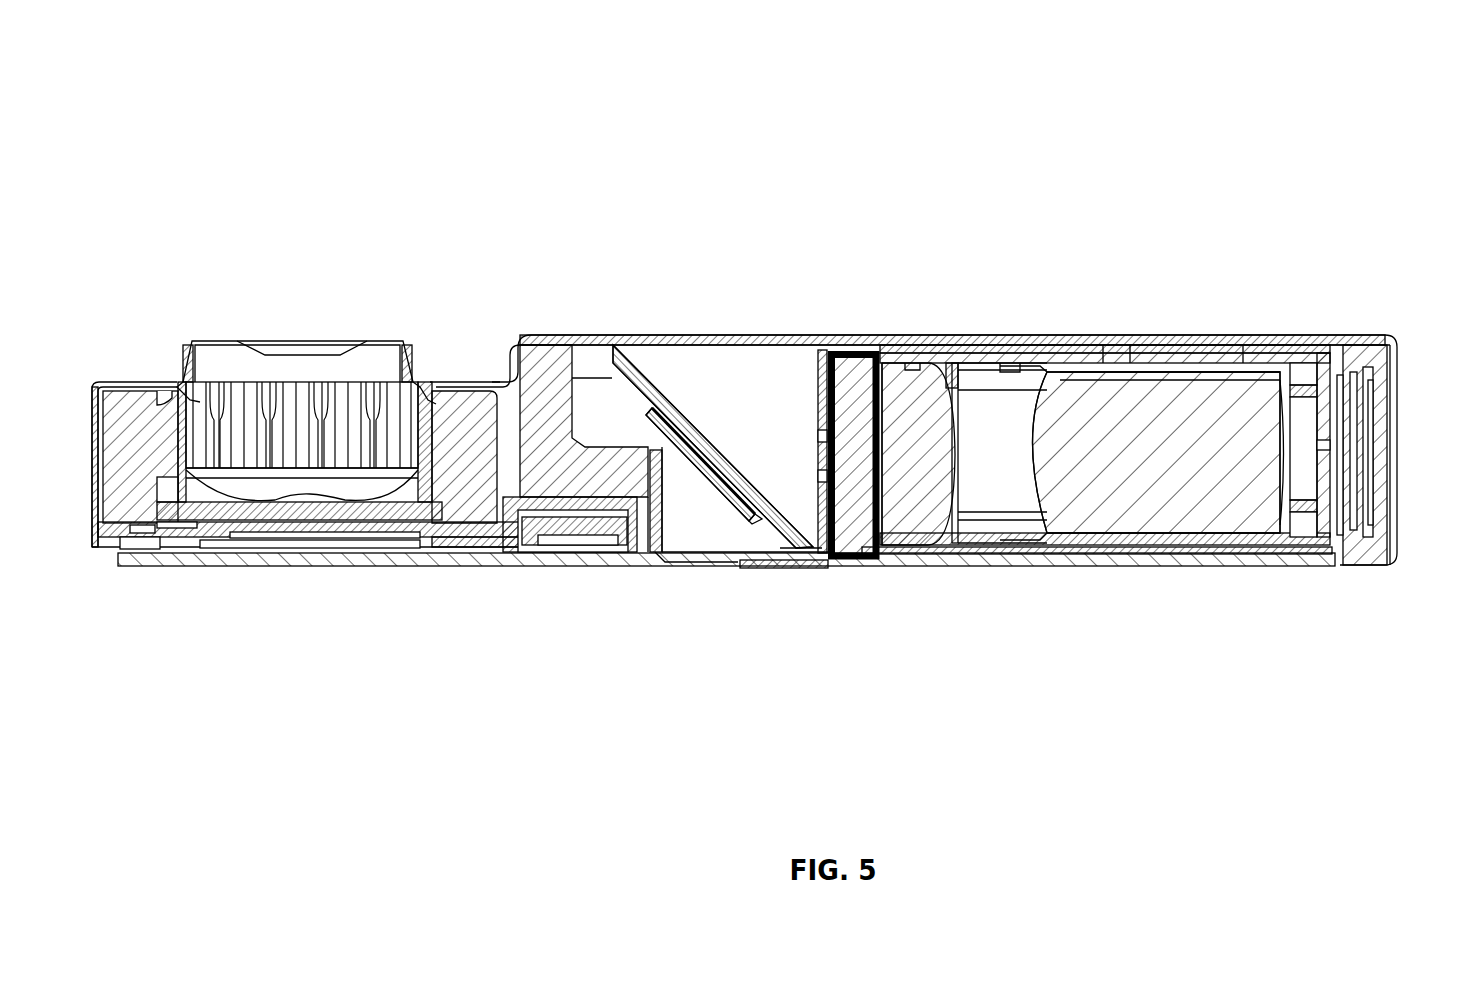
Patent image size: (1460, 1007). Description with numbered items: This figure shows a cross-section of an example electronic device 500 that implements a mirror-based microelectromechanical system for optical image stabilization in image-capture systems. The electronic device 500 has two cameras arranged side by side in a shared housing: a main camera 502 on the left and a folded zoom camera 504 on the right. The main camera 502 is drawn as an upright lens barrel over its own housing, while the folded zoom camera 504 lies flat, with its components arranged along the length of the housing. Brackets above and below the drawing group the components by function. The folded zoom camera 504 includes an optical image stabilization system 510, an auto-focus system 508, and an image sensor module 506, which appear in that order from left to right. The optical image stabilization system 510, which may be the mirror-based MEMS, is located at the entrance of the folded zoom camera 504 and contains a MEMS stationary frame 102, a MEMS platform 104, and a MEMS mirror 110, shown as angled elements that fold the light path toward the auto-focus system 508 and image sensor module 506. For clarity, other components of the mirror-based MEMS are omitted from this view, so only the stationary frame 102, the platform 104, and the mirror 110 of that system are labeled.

The electronic device 500 is at (175, 178).
The main camera 502 is at (498, 703).
The folded zoom camera 504 is at (1396, 703).
The image sensor module 506 is at (1343, 195).
The auto-focus system 508 is at (880, 195).
The optical image stabilization (OIS) system 510 is at (582, 195).
The MEMS stationary frame 102 is at (682, 448).
The MEMS platform 104 is at (728, 479).
The MEMS mirror 110 is at (783, 527).